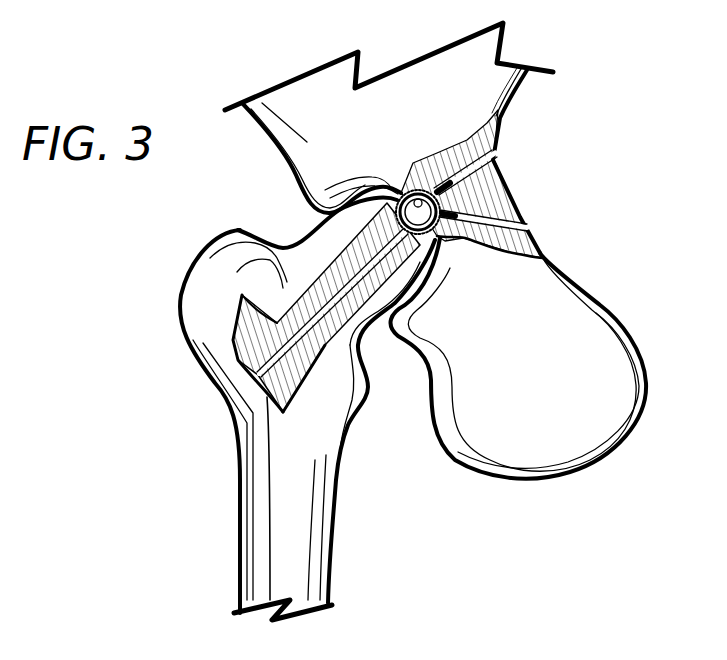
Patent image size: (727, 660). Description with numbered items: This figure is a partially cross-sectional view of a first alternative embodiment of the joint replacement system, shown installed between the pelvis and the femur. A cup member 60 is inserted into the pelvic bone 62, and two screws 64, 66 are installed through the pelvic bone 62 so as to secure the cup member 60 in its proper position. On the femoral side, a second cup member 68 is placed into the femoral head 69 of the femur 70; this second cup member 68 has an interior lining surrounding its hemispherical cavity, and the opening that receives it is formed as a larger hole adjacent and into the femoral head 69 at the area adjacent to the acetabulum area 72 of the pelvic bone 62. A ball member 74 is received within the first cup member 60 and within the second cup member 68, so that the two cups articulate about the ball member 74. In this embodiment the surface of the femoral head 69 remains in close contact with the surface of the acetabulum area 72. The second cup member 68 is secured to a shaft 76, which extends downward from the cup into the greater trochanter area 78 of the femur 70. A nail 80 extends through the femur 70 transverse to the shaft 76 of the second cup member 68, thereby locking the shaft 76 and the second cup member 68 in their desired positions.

The cup member 60 is at (392, 188).
The pelvic bone 62 is at (492, 85).
The screw 64 is at (493, 157).
The screw 66 is at (527, 226).
The second cup member 68 is at (383, 184).
The femoral head 69 is at (423, 297).
The femur 70 is at (253, 547).
The acetabulum area 72 is at (315, 213).
The ball member 74 is at (442, 248).
The shaft 76 is at (287, 295).
The greater trochanter area 78 is at (195, 275).
The nail 80 is at (263, 332).